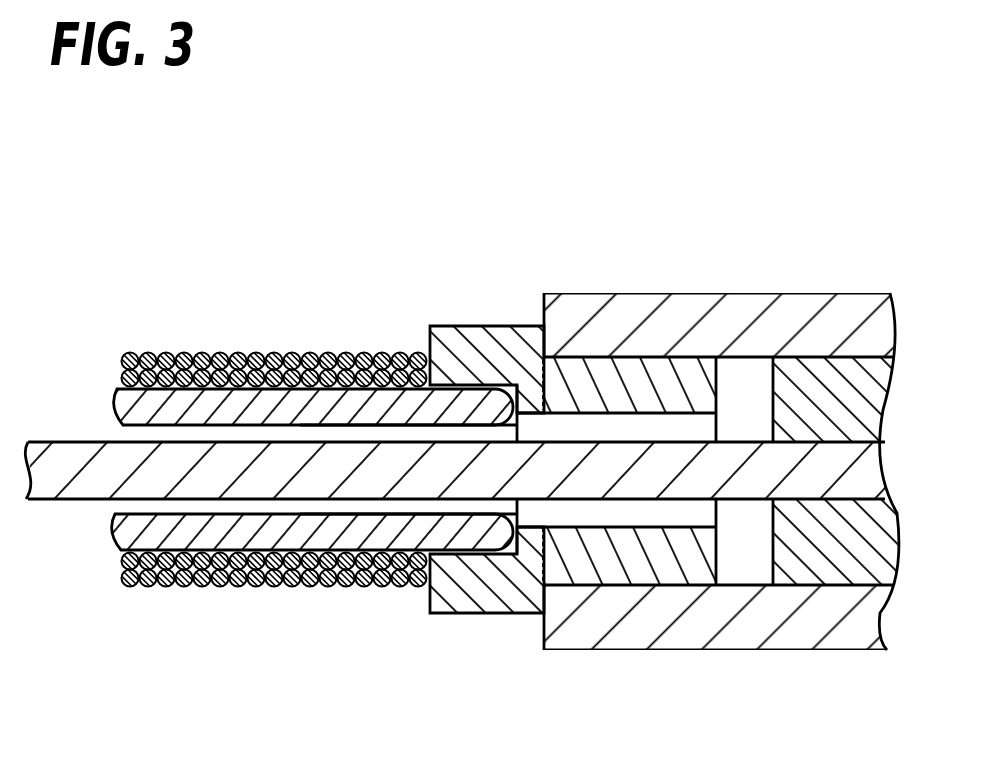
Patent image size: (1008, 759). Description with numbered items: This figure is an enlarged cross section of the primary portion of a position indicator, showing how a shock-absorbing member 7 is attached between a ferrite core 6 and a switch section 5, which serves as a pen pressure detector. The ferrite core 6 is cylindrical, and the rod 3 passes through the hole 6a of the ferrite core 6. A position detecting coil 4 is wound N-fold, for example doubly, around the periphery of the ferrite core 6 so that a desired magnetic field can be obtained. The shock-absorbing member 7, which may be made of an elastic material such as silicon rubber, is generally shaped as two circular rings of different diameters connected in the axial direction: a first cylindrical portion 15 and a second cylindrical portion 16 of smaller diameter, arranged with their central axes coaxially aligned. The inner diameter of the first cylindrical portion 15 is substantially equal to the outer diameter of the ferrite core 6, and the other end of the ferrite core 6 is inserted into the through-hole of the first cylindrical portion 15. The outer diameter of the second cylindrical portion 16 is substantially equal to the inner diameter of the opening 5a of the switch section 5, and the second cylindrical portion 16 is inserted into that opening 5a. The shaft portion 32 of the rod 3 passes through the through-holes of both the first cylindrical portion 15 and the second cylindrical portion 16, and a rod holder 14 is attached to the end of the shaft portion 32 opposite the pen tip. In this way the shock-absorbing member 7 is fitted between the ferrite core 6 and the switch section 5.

The rod 3 is at (68, 487).
The shaft portion 32 is at (302, 487).
The ferrite core 6 is at (217, 397).
The hole 6a is at (308, 427).
The position detecting coil 4 is at (218, 583).
The shock-absorbing member 7 is at (470, 326).
The first cylindrical portion 15 is at (483, 592).
The switch section 5 is at (792, 630).
The opening 5a is at (597, 578).
The second cylindrical portion 16 is at (685, 563).
The rod holder 14 is at (847, 565).